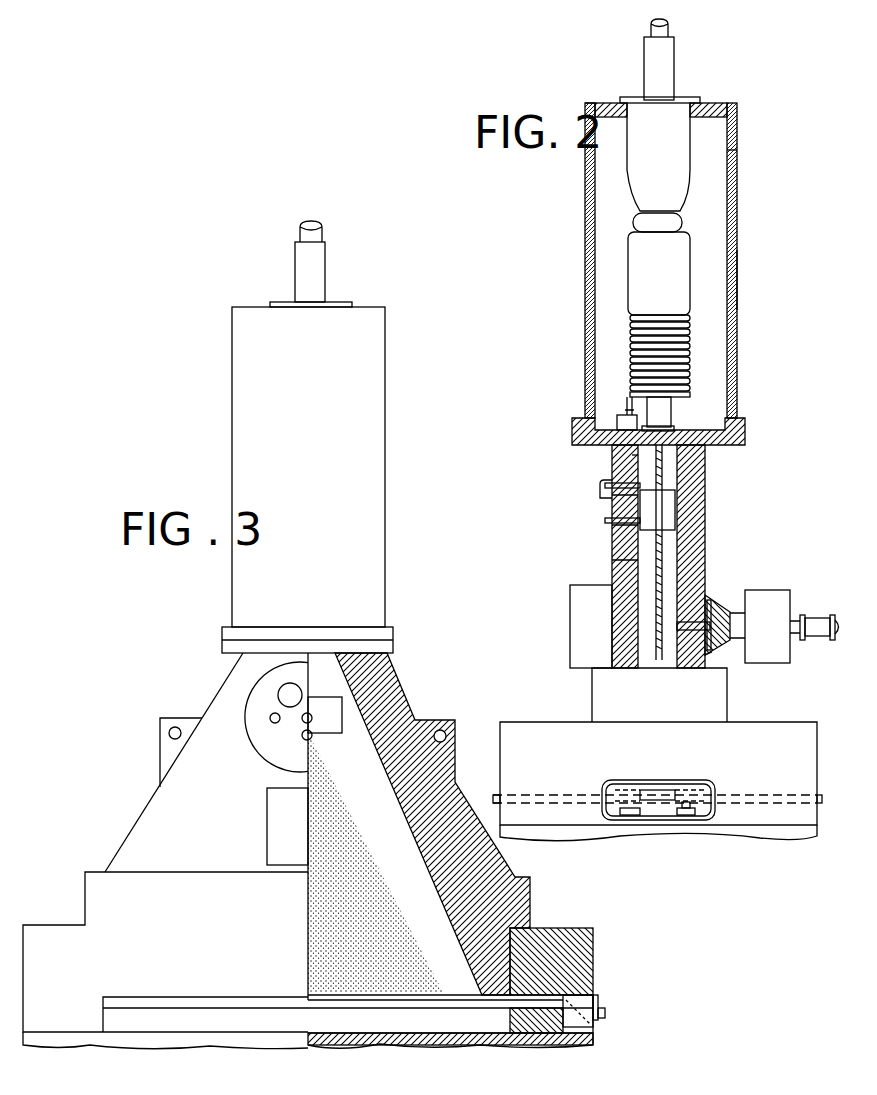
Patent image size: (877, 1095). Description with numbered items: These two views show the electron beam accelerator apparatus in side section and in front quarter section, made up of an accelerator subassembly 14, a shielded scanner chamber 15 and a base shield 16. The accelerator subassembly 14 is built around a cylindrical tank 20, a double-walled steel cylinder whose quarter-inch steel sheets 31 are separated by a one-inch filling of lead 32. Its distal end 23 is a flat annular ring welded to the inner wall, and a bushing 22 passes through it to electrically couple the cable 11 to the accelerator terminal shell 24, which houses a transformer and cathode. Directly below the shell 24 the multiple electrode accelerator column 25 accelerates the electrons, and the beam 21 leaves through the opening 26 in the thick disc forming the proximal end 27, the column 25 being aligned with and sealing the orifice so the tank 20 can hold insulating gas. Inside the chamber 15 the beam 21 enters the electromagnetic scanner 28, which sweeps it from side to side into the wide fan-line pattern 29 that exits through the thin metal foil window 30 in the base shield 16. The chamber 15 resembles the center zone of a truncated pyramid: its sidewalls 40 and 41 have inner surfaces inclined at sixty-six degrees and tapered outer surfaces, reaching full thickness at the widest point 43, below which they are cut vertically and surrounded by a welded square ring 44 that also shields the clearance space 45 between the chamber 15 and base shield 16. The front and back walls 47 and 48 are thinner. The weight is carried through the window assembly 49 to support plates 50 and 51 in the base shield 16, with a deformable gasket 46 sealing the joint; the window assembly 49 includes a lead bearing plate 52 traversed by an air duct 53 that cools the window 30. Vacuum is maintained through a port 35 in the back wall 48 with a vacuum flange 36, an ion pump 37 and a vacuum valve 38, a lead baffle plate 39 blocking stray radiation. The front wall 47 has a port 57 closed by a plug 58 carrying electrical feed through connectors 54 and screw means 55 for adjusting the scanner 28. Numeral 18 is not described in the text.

In FIG. 2, the cable 11 is at (668, 27).
In FIG. 3, the cable 11 is at (300, 236).
In FIG. 2, the accelerator subassembly 14 is at (745, 228).
In FIG. 3, the accelerator subassembly 14 is at (388, 436).
In FIG. 2, the shielded scanner chamber 15 is at (717, 547).
In FIG. 3, the shielded scanner chamber 15 is at (396, 686).
In FIG. 2, the base shield 16 is at (790, 722).
In FIG. 3, the base shield 16 is at (594, 938).
In FIG. 2, the drive shaft 18 is at (665, 445).
In FIG. 2, the cylindrical tank 20 is at (737, 316).
In FIG. 2, the beam 21 is at (657, 467).
In FIG. 2, the bushing 22 is at (672, 164).
In FIG. 2, the distal end 23 is at (708, 103).
In FIG. 2, the accelerator terminal shell 24 is at (670, 276).
In FIG. 2, the multiple electrode accelerator column 25 is at (690, 366).
In FIG. 2, the opening 26 is at (693, 474).
In FIG. 2, the proximal end 27 is at (745, 440).
In FIG. 2, the electromagnetic scanner 28 is at (672, 506).
In FIG. 3, the electromagnetic scanner 28 is at (342, 722).
In FIG. 3, the fan-line pattern 29 is at (364, 909).
In FIG. 3, the thin metal foil window 30 is at (410, 1008).
In FIG. 2, the steel sheets 31 is at (732, 162).
In FIG. 2, the filling of lead 32 is at (590, 103).
In FIG. 2, the port 35 is at (692, 618).
In FIG. 2, the vacuum flange 36 is at (726, 600).
In FIG. 2, the ion pump 37 is at (775, 590).
In FIG. 2, the vacuum valve 38 is at (816, 636).
In FIG. 2, the baffle plate 39 is at (726, 653).
In FIG. 3, the sidewall 40 is at (447, 764).
In FIG. 3, the sidewall 41 is at (158, 797).
In FIG. 3, the widest point 43 is at (507, 872).
In FIG. 3, the square ring 44 is at (532, 902).
In FIG. 3, the clearance space 45 is at (520, 952).
In FIG. 3, the gasket 46 is at (500, 1010).
In FIG. 2, the front wall 47 is at (612, 580).
In FIG. 2, the back wall 48 is at (705, 526).
In FIG. 2, the window assembly 49 is at (703, 816).
In FIG. 3, the window assembly 49 is at (606, 1006).
In FIG. 2, the support plate 50 is at (494, 797).
In FIG. 2, the support plate 51 is at (820, 804).
In FIG. 2, the bearing plate 52 is at (656, 818).
In FIG. 3, the air duct 53 is at (578, 1026).
In FIG. 2, the electrical feed through connectors 54 is at (600, 486).
In FIG. 2, the screw means 55 is at (605, 521).
In FIG. 2, the port 57 is at (614, 548).
In FIG. 2, the plug 58 is at (612, 500).